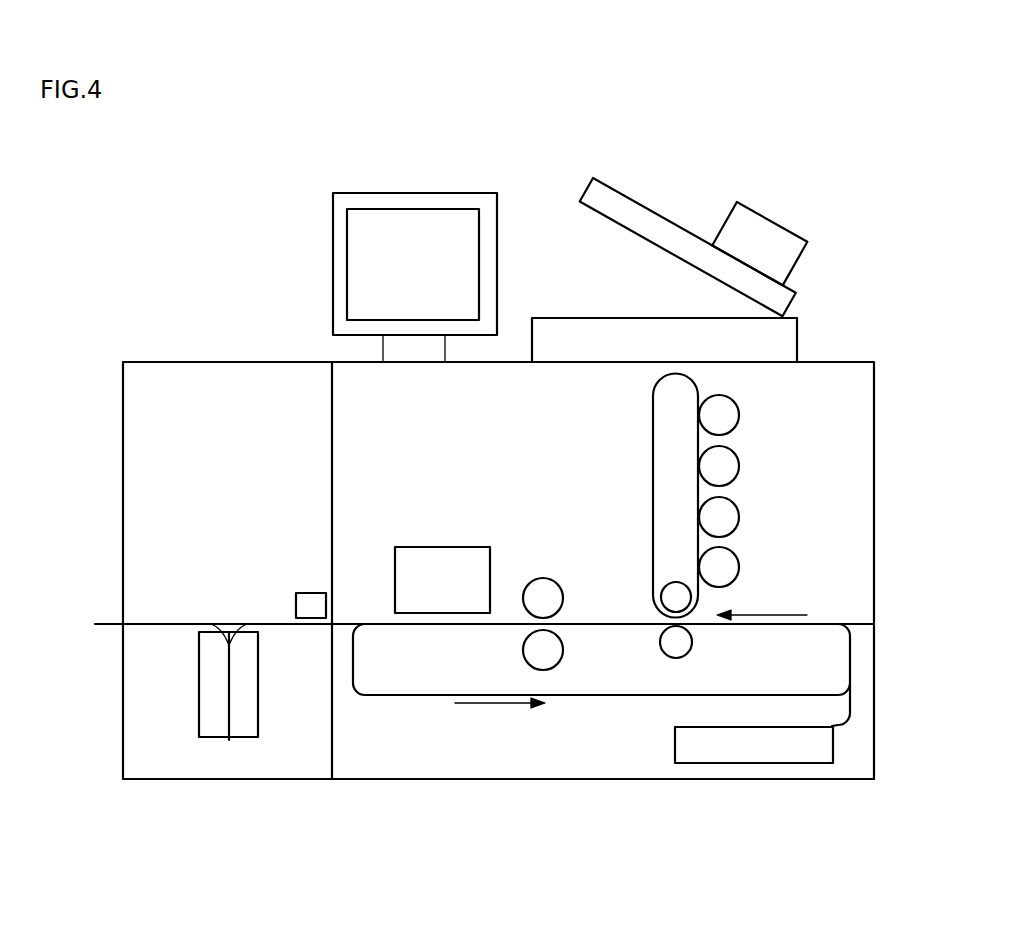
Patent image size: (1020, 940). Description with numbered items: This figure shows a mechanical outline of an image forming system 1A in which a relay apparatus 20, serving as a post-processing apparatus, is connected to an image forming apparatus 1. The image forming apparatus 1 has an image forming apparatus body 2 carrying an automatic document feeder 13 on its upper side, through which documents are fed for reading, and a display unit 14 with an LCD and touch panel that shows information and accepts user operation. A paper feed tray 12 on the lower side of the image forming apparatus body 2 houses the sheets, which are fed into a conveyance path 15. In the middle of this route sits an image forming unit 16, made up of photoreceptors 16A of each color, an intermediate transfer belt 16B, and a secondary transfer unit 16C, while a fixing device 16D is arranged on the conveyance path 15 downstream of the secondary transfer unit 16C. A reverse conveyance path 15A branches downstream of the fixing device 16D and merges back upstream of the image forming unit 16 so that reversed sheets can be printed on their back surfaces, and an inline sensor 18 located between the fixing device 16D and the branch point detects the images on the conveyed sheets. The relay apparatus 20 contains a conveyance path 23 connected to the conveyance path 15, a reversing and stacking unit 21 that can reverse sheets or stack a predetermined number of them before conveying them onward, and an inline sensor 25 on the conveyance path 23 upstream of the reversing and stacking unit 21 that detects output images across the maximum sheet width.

The image forming apparatus 1 is at (698, 781).
The image forming system 1A is at (519, 925).
The image forming apparatus body 2 is at (874, 568).
The paper feed tray 12 is at (833, 743).
The automatic document feeder 13 is at (750, 182).
The display unit 14 is at (415, 193).
The conveyance path 15 is at (646, 691).
The reverse conveyance path 15A is at (602, 697).
The image forming unit 16 is at (730, 526).
The photoreceptors 16A is at (750, 444).
The intermediate transfer belt 16B is at (653, 437).
The secondary transfer unit 16C is at (691, 639).
The fixing device 16D is at (545, 578).
The inline sensor 18 is at (445, 547).
The relay apparatus 20 is at (292, 780).
The reversing and stacking unit 21 is at (215, 737).
The conveyance path 23 is at (168, 624).
The inline sensor 25 is at (312, 593).